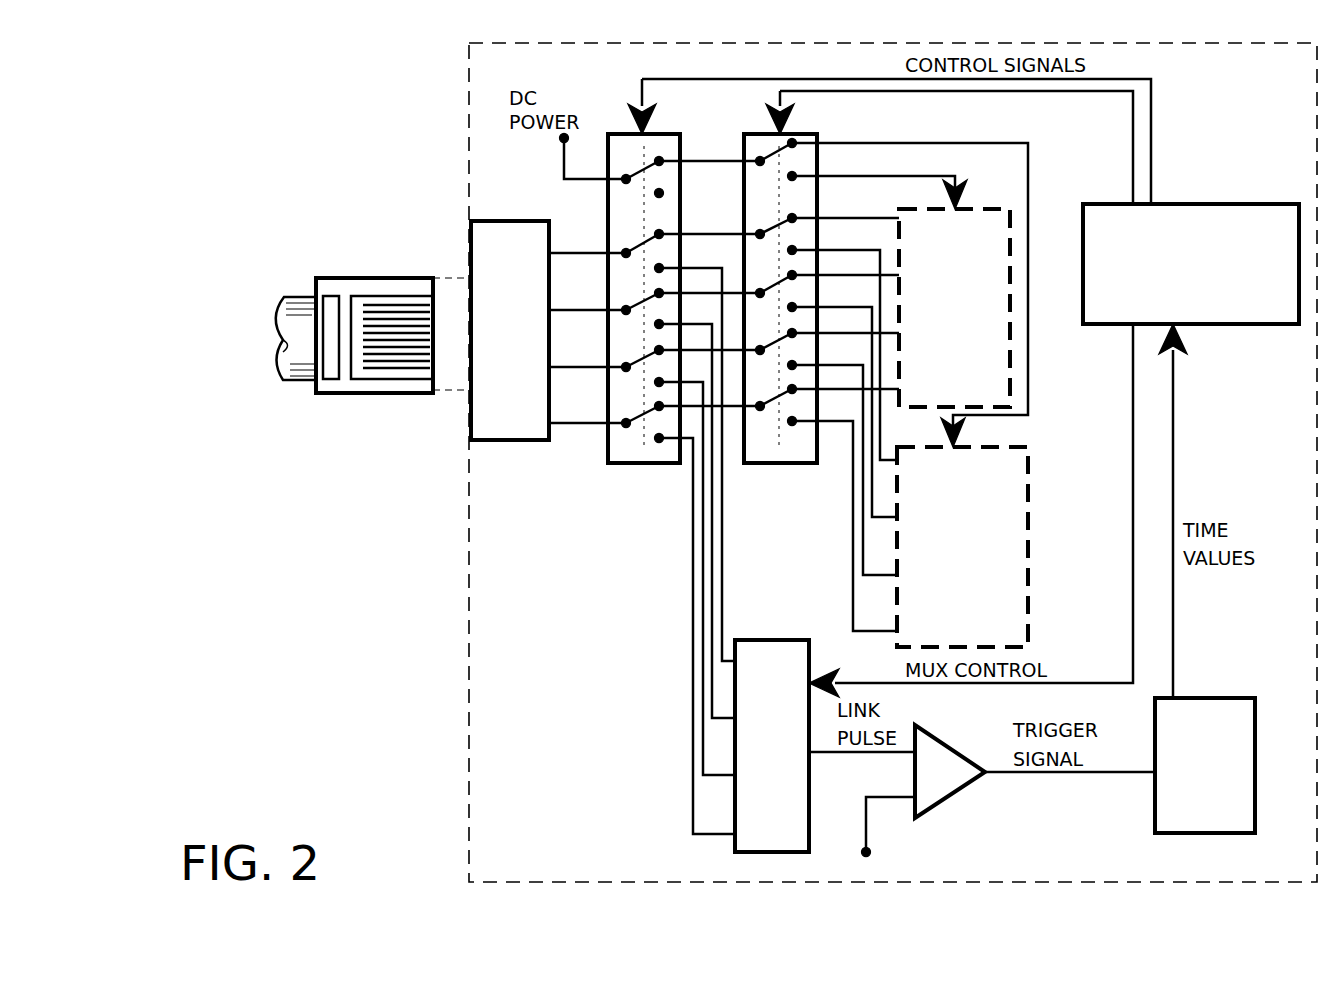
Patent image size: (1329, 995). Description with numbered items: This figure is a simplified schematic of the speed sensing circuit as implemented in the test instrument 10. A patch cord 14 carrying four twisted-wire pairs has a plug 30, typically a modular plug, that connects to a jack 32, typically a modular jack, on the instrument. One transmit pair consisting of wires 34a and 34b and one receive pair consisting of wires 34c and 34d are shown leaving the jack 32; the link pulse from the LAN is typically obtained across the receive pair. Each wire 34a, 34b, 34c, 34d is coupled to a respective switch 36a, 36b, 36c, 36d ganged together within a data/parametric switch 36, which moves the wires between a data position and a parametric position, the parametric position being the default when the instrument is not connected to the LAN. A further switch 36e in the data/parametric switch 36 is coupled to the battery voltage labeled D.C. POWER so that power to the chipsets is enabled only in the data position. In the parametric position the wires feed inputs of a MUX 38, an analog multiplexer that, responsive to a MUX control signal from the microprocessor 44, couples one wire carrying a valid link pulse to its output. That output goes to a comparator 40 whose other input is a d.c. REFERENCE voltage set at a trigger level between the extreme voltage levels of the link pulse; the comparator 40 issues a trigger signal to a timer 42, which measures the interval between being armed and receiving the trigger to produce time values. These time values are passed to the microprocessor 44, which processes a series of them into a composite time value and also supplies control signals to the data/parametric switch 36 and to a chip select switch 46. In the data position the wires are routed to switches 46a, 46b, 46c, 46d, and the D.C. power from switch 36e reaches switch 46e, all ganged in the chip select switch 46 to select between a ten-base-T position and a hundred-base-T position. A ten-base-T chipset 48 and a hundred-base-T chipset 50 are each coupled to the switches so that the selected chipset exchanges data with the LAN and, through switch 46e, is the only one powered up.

The test instrument 10 is at (527, 860).
The patch cord 14 is at (313, 185).
The plug 30 is at (343, 393).
The jack 32 is at (505, 440).
The wire 34a is at (587, 410).
The wire 34b is at (587, 353).
The wire 34c is at (587, 296).
The wire 34d is at (587, 239).
The data/parametric switch 36 is at (613, 343).
The switch 36a is at (637, 419).
The switch 36b is at (637, 363).
The switch 36c is at (637, 306).
The switch 36d is at (637, 249).
The switch 36e is at (637, 174).
The MUX 38 is at (757, 640).
The comparator 40 is at (920, 818).
The timer 42 is at (1205, 698).
The microprocessor 44 is at (1183, 204).
The chip select switch 46 is at (778, 343).
The switch 46a is at (772, 403).
The switch 46b is at (772, 347).
The switch 46c is at (772, 289).
The switch 46d is at (772, 232).
The switch 46e is at (772, 158).
The 10BASE-T chipset 48 is at (1010, 393).
The 100BASE-T chipset 50 is at (1028, 577).